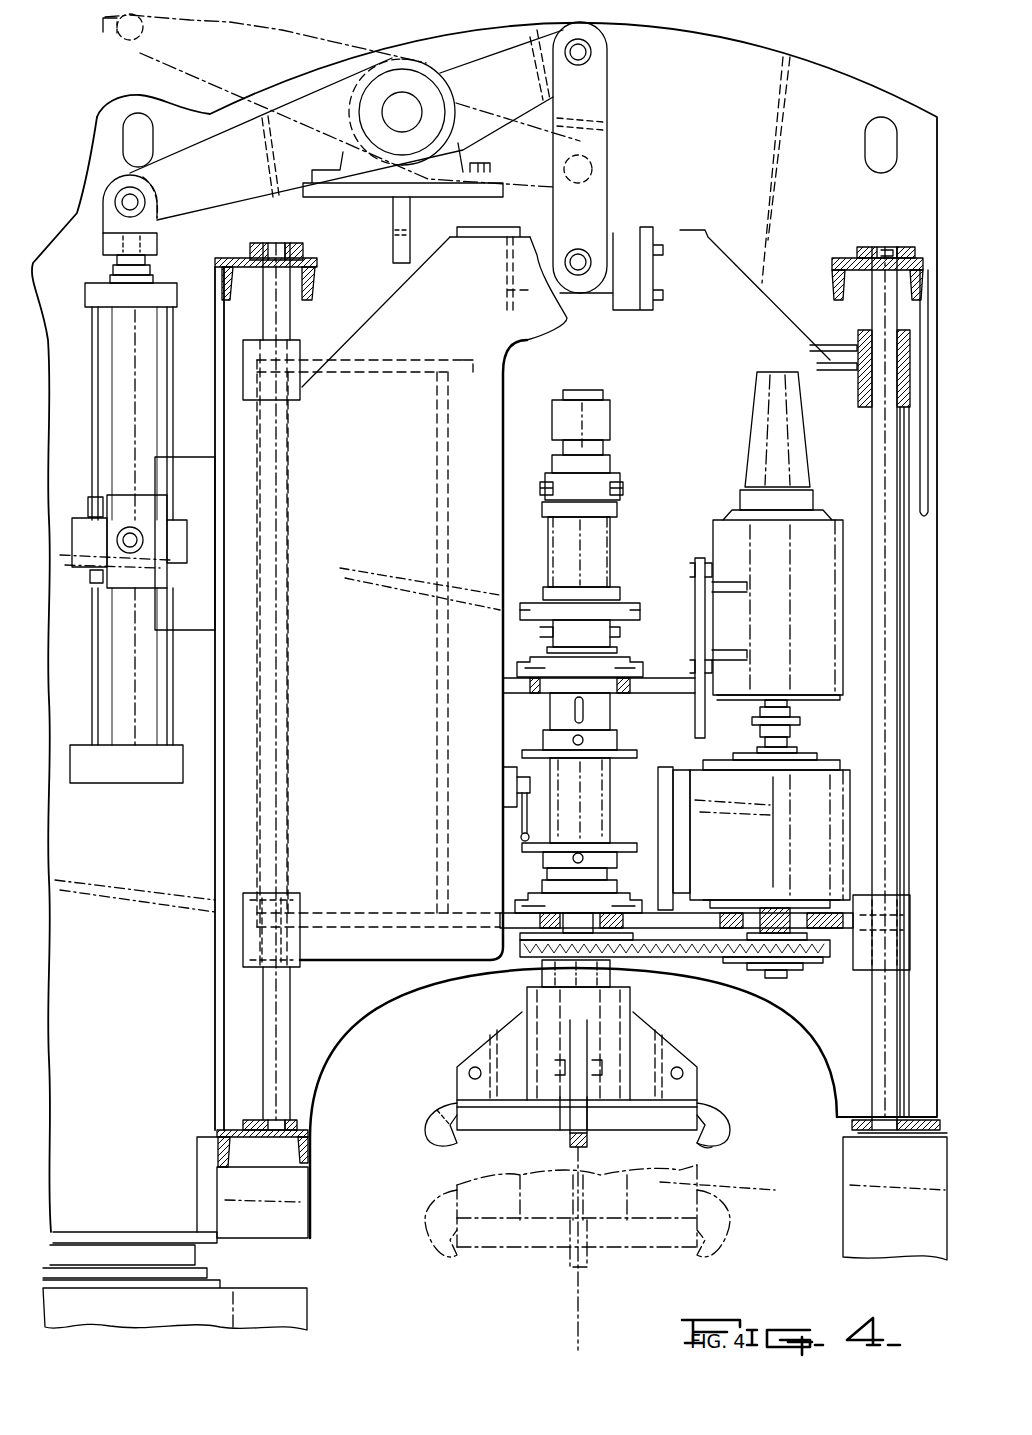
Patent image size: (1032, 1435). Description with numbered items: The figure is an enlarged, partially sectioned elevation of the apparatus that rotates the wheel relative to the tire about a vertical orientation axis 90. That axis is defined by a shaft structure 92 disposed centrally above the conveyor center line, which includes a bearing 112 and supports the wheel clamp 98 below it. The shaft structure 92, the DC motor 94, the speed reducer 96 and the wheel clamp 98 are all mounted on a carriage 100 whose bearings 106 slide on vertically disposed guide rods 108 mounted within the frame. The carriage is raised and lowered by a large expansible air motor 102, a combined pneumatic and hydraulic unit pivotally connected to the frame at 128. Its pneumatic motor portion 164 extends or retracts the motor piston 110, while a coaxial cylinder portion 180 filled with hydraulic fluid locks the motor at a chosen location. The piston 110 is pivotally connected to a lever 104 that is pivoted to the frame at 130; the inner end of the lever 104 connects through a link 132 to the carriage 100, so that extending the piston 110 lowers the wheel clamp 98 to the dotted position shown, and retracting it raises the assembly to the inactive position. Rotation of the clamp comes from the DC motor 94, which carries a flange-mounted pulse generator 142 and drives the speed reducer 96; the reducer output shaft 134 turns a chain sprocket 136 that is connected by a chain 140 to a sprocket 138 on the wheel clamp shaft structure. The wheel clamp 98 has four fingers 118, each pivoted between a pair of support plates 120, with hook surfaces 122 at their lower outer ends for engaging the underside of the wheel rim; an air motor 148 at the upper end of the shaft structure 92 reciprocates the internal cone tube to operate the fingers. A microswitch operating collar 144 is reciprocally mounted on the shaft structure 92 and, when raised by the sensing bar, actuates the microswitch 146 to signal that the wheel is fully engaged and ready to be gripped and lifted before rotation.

The orientation axis 90 is at (580, 1303).
The shaft structure 92 is at (571, 651).
The DC motor 94 is at (766, 555).
The speed reducer 96 is at (796, 817).
The wheel clamp 98 is at (640, 1020).
The carriage 100 is at (343, 531).
The air motor 102 is at (141, 563).
The lever 104 is at (213, 170).
The bearings 106 is at (863, 410).
The guide rods 108 is at (878, 313).
The motor piston 110 is at (158, 242).
The bearing 112 is at (627, 653).
The fingers 118 is at (443, 1100).
The support plates 120 is at (545, 1002).
The hook surfaces 122 is at (717, 1147).
The pivot connection of air motor to frame 128 is at (128, 548).
The lever pivot 130 is at (417, 112).
The link 132 is at (607, 100).
The output shaft 134 is at (780, 905).
The chain sprocket 136 is at (807, 970).
The sprocket 138 is at (527, 967).
The chain 140 is at (693, 963).
The pulse generator 142 is at (763, 418).
The microswitch operating collar 144 is at (628, 758).
The microswitch 146 is at (508, 770).
The air motor 148 is at (606, 418).
The pneumatic motor portion 164 is at (108, 684).
The coaxial cylinder portion 180 is at (113, 404).